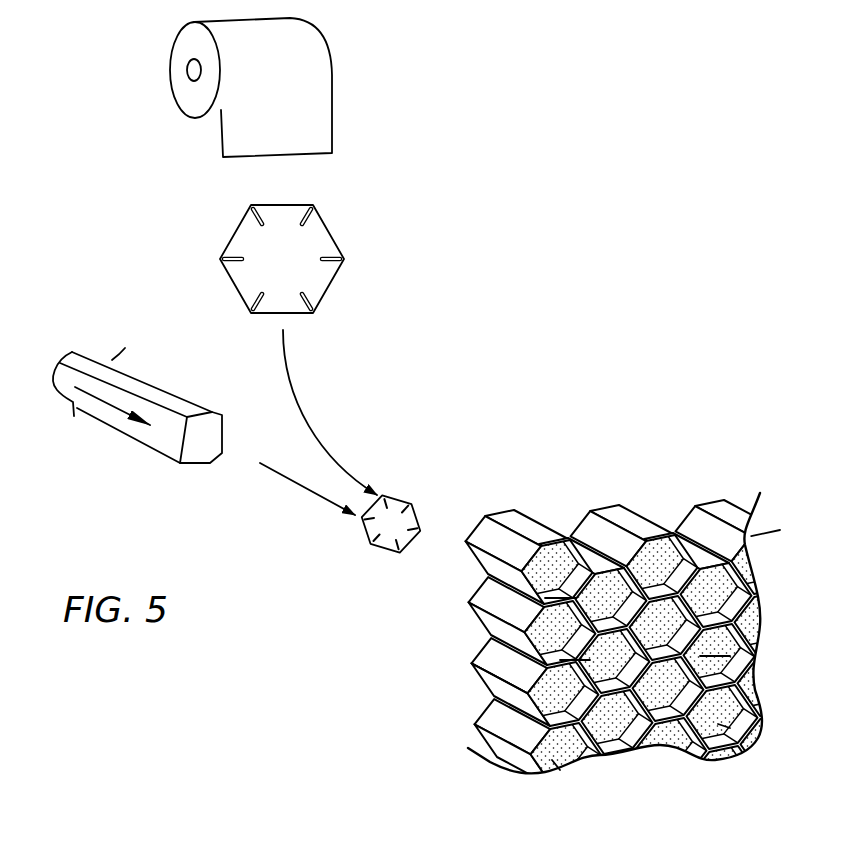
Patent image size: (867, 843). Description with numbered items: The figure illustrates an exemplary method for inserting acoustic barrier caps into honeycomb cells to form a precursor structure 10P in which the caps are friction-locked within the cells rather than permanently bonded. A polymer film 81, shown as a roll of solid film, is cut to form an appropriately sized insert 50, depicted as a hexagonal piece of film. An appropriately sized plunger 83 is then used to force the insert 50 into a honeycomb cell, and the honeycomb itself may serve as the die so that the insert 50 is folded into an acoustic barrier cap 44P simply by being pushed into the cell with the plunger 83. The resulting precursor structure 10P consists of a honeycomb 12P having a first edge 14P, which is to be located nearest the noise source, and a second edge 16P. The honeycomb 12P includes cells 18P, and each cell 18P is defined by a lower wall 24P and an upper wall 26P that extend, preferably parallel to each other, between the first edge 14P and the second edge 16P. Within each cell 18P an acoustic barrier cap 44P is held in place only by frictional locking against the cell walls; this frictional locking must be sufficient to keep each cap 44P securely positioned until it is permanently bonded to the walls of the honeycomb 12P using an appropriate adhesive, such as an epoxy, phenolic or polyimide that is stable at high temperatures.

The polymer film 81 is at (297, 78).
The insert 50 is at (298, 243).
The plunger 83 is at (120, 428).
The precursor structure 10P is at (668, 477).
The acoustic barrier cap 44P is at (555, 552).
The honeycomb 12P is at (742, 572).
The cell 18P is at (707, 641).
The upper wall 26P is at (550, 680).
The first edge 14P is at (485, 705).
The second edge 16P is at (562, 763).
The lower wall 24P is at (725, 716).